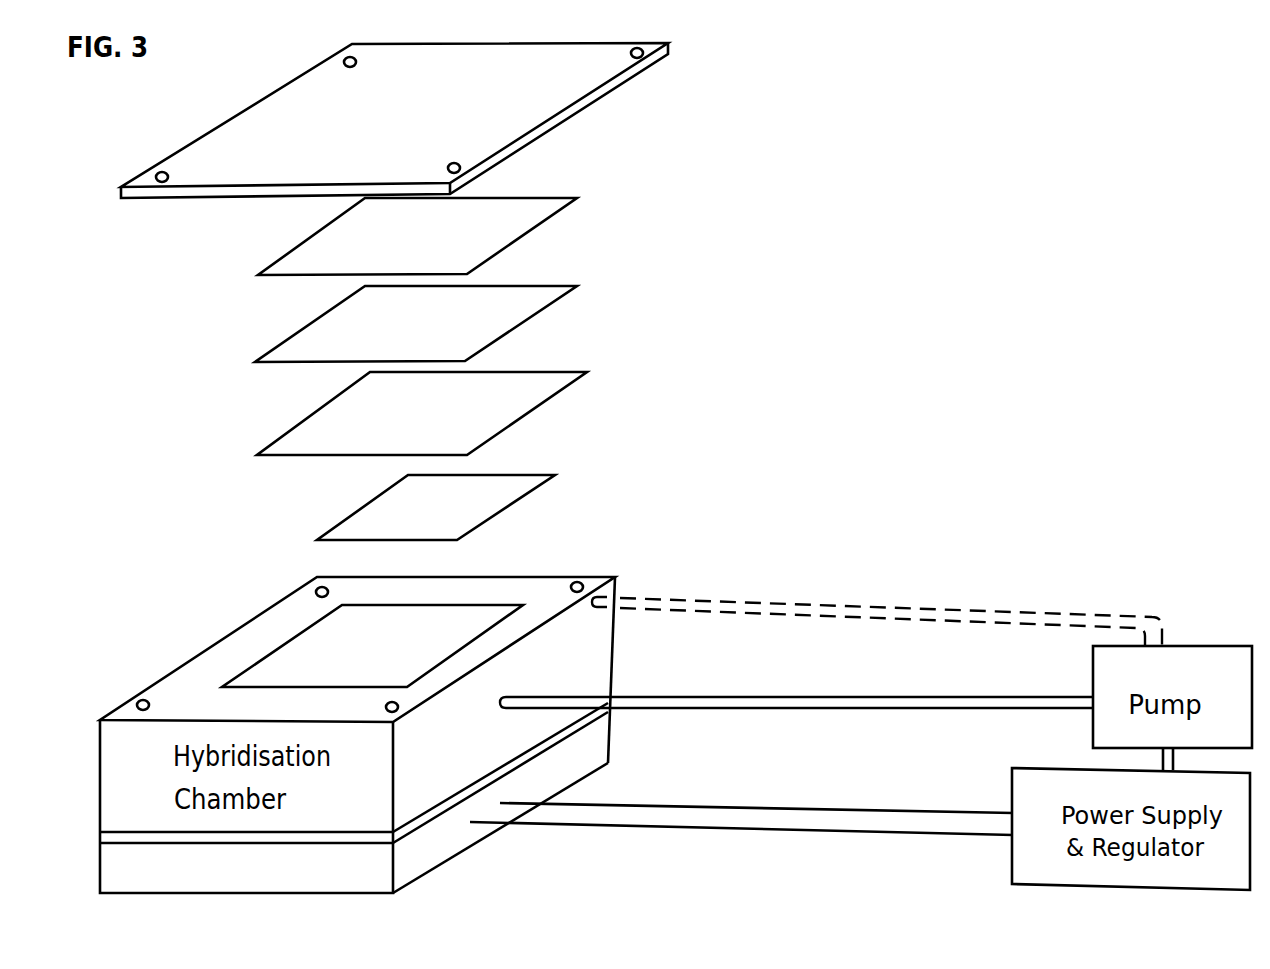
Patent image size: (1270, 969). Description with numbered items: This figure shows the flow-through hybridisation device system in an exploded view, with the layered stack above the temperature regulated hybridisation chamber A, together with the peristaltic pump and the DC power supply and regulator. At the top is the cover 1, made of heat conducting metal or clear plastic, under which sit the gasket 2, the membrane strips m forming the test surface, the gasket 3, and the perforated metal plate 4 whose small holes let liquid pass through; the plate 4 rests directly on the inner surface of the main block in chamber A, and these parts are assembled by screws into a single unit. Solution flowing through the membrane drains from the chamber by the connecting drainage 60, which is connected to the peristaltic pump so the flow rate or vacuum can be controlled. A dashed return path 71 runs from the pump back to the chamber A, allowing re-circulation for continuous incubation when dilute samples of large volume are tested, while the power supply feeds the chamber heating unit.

The top cover 1 is at (667, 63).
The gasket 2 is at (602, 202).
The membrane strip m is at (590, 287).
The gasket 3 is at (592, 373).
The metal plate 4 is at (563, 475).
The hybridisation chamber A is at (625, 583).
The return path 71 is at (891, 608).
The connecting drainage 60 is at (796, 686).